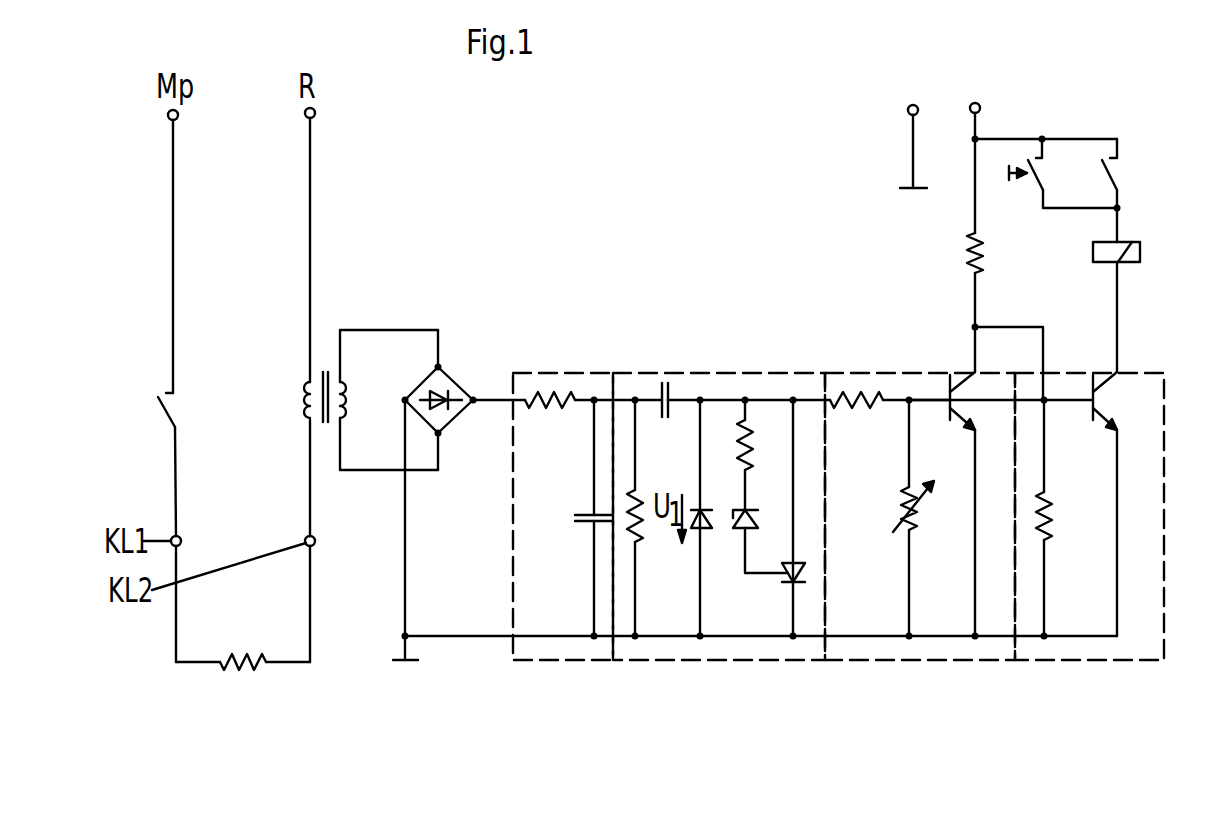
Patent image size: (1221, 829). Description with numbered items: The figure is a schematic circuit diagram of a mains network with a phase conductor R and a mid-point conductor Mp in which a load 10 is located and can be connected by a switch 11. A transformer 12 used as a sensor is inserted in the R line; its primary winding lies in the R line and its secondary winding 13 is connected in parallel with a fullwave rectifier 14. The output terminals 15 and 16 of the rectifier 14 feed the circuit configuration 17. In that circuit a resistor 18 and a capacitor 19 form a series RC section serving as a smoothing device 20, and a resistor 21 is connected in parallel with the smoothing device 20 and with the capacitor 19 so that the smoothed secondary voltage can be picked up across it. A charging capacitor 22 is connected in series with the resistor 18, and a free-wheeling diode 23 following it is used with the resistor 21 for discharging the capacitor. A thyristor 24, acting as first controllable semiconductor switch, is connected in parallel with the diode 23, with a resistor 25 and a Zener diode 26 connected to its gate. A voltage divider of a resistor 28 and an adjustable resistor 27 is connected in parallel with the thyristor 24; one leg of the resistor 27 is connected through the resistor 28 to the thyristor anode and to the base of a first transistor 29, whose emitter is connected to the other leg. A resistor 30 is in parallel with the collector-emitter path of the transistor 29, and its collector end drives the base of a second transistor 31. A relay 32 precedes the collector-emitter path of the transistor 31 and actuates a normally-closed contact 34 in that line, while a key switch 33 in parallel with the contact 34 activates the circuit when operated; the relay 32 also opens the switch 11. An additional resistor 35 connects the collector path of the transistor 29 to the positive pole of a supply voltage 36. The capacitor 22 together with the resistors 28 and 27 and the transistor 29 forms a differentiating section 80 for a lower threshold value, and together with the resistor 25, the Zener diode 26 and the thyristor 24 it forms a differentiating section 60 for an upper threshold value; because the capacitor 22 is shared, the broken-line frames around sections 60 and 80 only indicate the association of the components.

The load 10 is at (243, 667).
The switch 11 is at (156, 406).
The transformer 12 is at (324, 370).
The secondary winding 13 is at (342, 387).
The fullwave rectifier 14 is at (456, 382).
The output terminal 15 is at (475, 397).
The output terminal 16 is at (407, 397).
The circuit configuration 17 is at (762, 277).
The resistor 18 is at (548, 395).
The capacitor 19 is at (585, 514).
The smoothing device 20 is at (552, 661).
The resistor 21 is at (633, 544).
The charging capacitor 22 is at (651, 338).
The free-wheeling diode 23 is at (692, 532).
The thyristor 24 is at (797, 587).
The resistor 25 is at (740, 426).
The Zener diode 26 is at (743, 532).
The adjustable resistor 27 is at (922, 520).
The resistor 28 is at (850, 393).
The first transistor 29 is at (948, 378).
The resistor 30 is at (1052, 510).
The second transistor 31 is at (1105, 383).
The relay 32 is at (1142, 252).
The key switch 33 is at (1039, 178).
The normally-closed contact 34 is at (1113, 175).
The additional resistor 35 is at (970, 272).
The supply voltage 36 is at (975, 103).
The differentiating section for upper threshold value 60 is at (766, 661).
The differentiating section for lower threshold value 80 is at (937, 661).